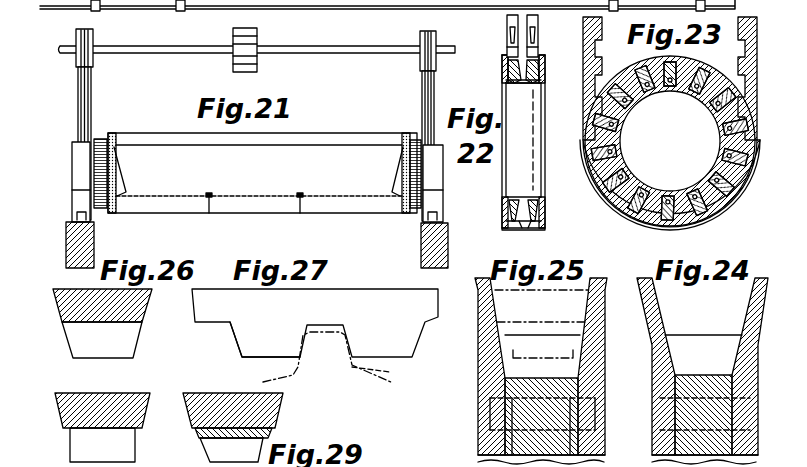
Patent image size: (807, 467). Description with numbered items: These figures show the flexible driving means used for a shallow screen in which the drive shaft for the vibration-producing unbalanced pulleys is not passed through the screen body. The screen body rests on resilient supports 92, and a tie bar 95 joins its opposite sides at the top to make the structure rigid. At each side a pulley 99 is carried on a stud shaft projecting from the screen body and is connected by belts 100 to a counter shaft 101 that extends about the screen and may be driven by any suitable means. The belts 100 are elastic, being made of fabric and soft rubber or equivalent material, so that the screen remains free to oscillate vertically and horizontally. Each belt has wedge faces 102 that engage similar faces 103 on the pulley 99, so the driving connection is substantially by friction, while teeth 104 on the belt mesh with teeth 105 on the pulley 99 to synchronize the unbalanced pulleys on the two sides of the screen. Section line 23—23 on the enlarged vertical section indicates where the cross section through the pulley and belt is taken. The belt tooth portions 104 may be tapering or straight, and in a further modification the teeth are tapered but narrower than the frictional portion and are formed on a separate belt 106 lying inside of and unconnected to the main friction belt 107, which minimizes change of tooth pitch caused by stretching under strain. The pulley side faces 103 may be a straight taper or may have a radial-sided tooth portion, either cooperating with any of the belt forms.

In FIG. 21, the resilient support 92 is at (72, 150).
In FIG. 21, the tie bar 95 is at (330, 143).
In FIG. 21, the pulley 99 is at (82, 172).
In FIG. 23, the pulley 99 is at (714, 75).
In FIG. 24, the pulley 99 is at (652, 398).
In FIG. 25, the pulley 99 is at (478, 403).
In FIG. 21, the belt 100 is at (92, 104).
In FIG. 21, the counter shaft 101 is at (143, 50).
In FIG. 26, the wedge face 102 is at (55, 308).
In FIG. 28, the wedge face 102 is at (58, 412).
In FIG. 27, the wedge face 102 is at (420, 313).
In FIG. 29, the wedge face 102 is at (195, 425).
In FIG. 24, the wedge face 103 is at (653, 308).
In FIG. 25, the wedge face 103 is at (492, 308).
In FIG. 23, the tooth 104 is at (618, 63).
In FIG. 26, the tooth 104 is at (125, 345).
In FIG. 28, the tooth 104 is at (125, 448).
In FIG. 27, the tooth 104 is at (243, 347).
In FIG. 23, the tooth 105 is at (735, 95).
In FIG. 24, the tooth 105 is at (705, 400).
In FIG. 25, the tooth 105 is at (542, 400).
In FIG. 27, the tooth 105 is at (342, 357).
In FIG. 29, the separate belt 106 is at (265, 433).
In FIG. 29, the main friction belt 107 is at (270, 408).
In FIG. 22, the section line 23— 23 is at (526, 13).